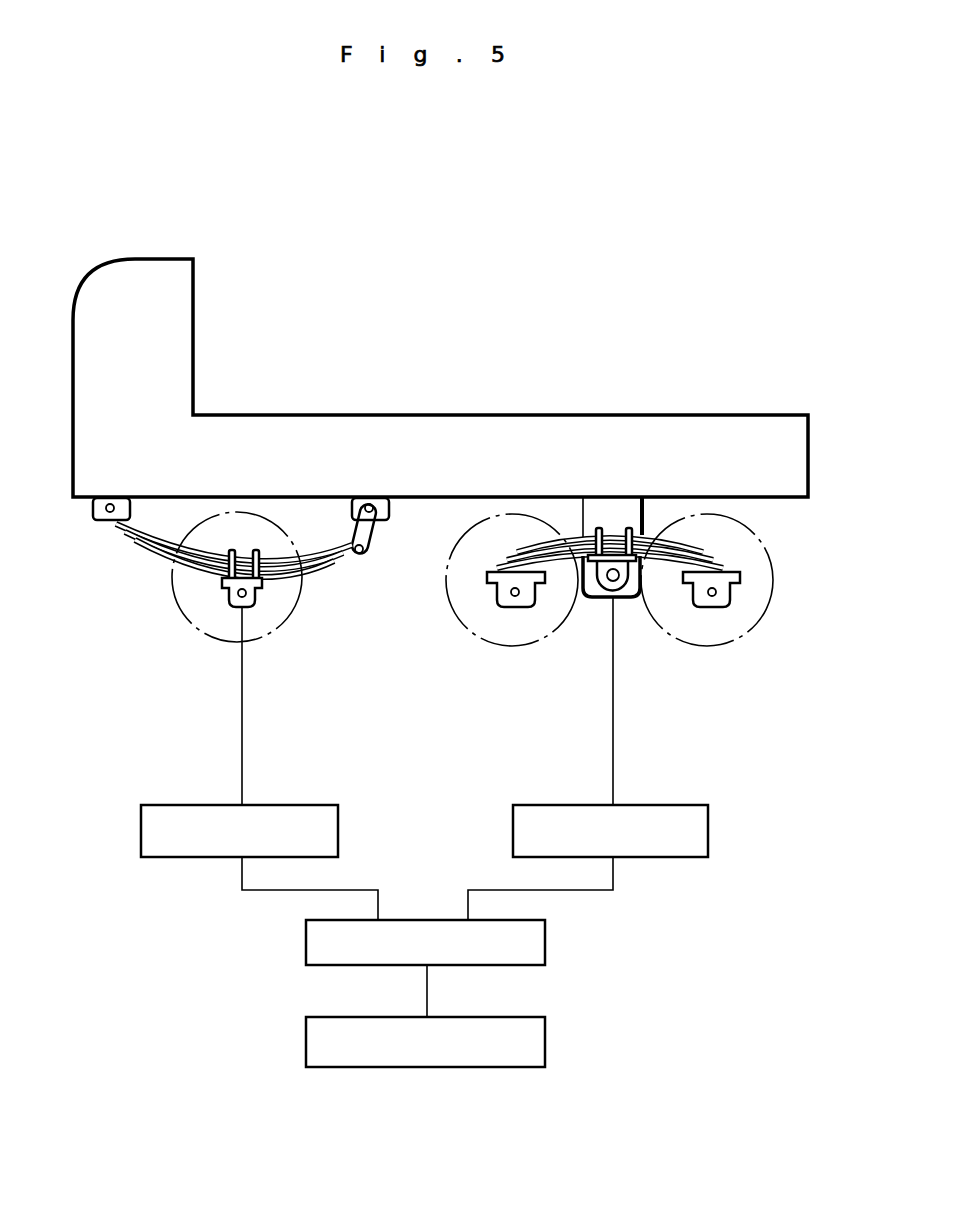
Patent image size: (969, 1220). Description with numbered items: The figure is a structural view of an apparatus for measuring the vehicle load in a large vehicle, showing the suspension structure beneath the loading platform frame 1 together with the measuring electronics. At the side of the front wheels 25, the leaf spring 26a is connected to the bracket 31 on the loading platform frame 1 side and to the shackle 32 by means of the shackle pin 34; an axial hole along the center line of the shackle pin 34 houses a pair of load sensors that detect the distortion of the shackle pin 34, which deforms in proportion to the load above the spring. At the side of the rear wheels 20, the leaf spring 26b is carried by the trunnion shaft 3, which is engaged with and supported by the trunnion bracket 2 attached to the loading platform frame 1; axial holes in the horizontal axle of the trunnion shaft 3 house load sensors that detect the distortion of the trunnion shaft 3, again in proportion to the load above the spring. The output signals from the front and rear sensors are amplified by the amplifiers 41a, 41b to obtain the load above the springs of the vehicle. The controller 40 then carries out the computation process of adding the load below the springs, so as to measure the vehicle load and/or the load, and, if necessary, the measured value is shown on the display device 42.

The loading platform frame 1 is at (148, 303).
The trunnion bracket 2 is at (631, 598).
The trunnion shaft 3 is at (613, 581).
The rear wheels 20 is at (450, 603).
The front wheels 25 is at (190, 632).
The leaf spring 26a is at (145, 560).
The leaf spring 26b is at (578, 536).
The bracket 31 is at (93, 506).
The shackle 32 is at (379, 549).
The shackle pin 34 is at (368, 497).
The controller 40 is at (548, 945).
The amplifier 41a is at (157, 857).
The amplifier 41b is at (700, 857).
The display device 42 is at (548, 1043).